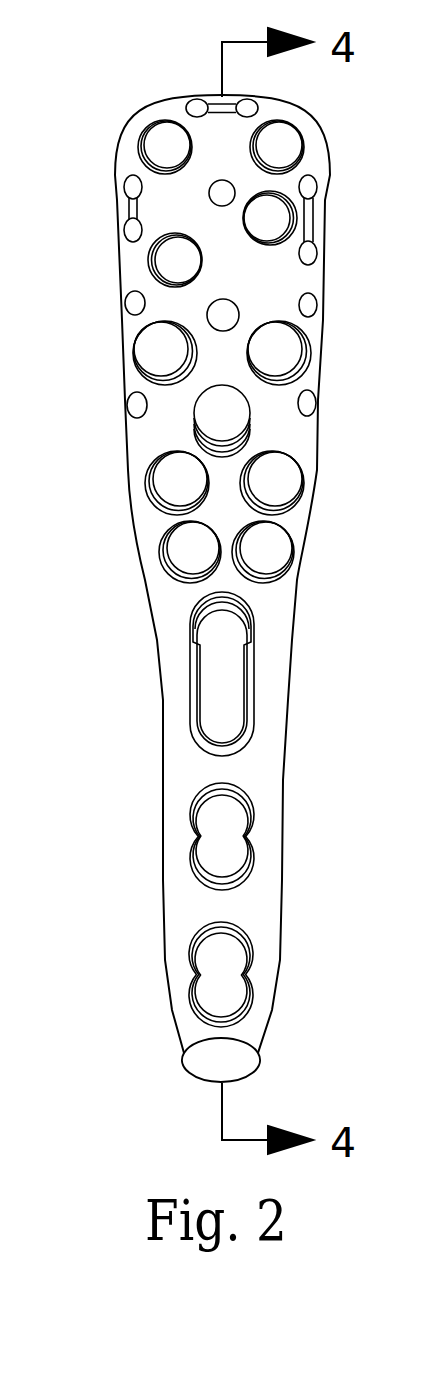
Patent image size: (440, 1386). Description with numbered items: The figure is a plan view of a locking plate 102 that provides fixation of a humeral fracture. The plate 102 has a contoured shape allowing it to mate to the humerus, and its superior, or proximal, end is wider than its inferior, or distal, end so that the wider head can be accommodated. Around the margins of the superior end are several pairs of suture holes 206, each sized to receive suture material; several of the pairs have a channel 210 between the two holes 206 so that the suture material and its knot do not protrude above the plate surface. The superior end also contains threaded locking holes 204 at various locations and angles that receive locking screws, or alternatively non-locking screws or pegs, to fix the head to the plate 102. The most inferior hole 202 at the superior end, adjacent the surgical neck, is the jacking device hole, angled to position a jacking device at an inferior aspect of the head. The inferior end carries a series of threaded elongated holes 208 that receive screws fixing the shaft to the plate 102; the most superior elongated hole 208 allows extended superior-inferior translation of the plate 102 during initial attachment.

The locking plate 102 is at (292, 657).
The jacking device hole 202 is at (198, 415).
The locking hole 204 is at (305, 150).
The suture hole 206 is at (197, 98).
The elongated hole 208 is at (188, 692).
The channel 210 is at (128, 208).